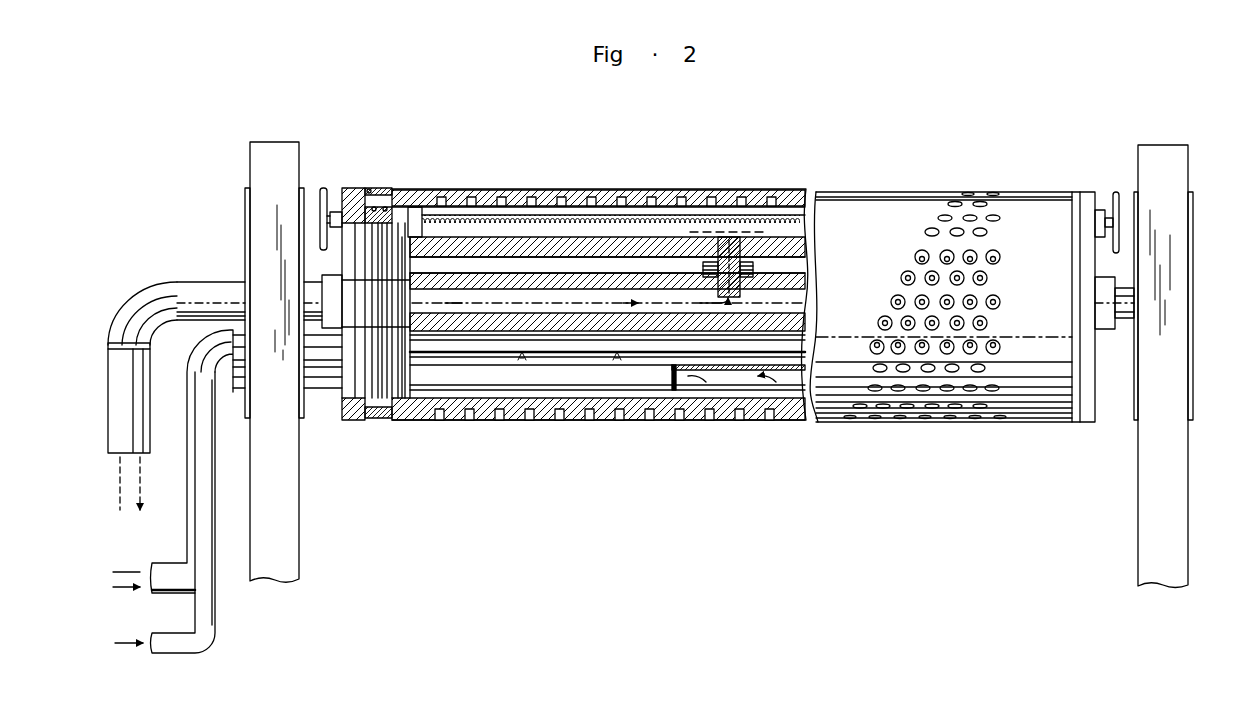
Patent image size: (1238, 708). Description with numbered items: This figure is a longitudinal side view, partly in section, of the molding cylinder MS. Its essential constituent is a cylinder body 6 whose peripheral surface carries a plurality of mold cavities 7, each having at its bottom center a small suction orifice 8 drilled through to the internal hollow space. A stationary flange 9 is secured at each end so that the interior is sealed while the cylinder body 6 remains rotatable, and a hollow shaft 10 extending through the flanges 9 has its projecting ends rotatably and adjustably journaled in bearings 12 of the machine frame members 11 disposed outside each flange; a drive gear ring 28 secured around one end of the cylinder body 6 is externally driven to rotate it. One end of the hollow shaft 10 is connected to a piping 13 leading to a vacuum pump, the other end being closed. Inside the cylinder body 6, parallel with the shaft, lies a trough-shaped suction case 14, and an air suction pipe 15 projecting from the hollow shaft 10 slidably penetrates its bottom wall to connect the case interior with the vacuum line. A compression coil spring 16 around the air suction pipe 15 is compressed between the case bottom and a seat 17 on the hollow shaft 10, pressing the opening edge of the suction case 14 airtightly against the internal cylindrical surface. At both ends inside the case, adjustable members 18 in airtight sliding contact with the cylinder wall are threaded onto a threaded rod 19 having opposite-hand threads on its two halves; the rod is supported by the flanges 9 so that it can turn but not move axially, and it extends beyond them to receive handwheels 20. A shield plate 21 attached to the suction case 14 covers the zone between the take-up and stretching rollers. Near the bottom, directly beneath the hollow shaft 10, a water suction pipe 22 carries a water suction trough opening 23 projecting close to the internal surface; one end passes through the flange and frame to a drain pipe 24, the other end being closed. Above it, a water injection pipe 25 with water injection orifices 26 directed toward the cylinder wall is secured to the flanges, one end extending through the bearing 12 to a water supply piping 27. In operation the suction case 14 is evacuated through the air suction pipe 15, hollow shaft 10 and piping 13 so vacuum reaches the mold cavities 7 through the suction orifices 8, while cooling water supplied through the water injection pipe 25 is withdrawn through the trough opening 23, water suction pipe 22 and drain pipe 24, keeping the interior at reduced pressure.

The cylinder body 6 is at (622, 190).
The mold cavities 7 is at (700, 197).
The suction orifice 8 is at (537, 197).
The stationary flange 9 is at (350, 188).
The hollow shaft 10 is at (208, 290).
The machine frame members 11 is at (290, 507).
The bearings 12 is at (244, 205).
The piping 13 is at (108, 412).
The suction case 14 is at (667, 245).
The air suction pipe 15 is at (742, 237).
The compression coil spring 16 is at (798, 242).
The seat 17 is at (802, 272).
The adjustable members 18 is at (414, 207).
The threaded rod 19 is at (573, 215).
The handwheels 20 is at (323, 188).
The shield plate 21 is at (488, 262).
The water suction pipe 22 is at (312, 394).
The water suction trough opening 23 is at (749, 393).
The drain pipe 24 is at (162, 572).
The water injection pipe 25 is at (330, 350).
The water injection orifices 26 is at (722, 355).
The water supply piping 27 is at (205, 608).
The drive gear ring 28 is at (378, 190).
The molding cylinder MS is at (781, 184).